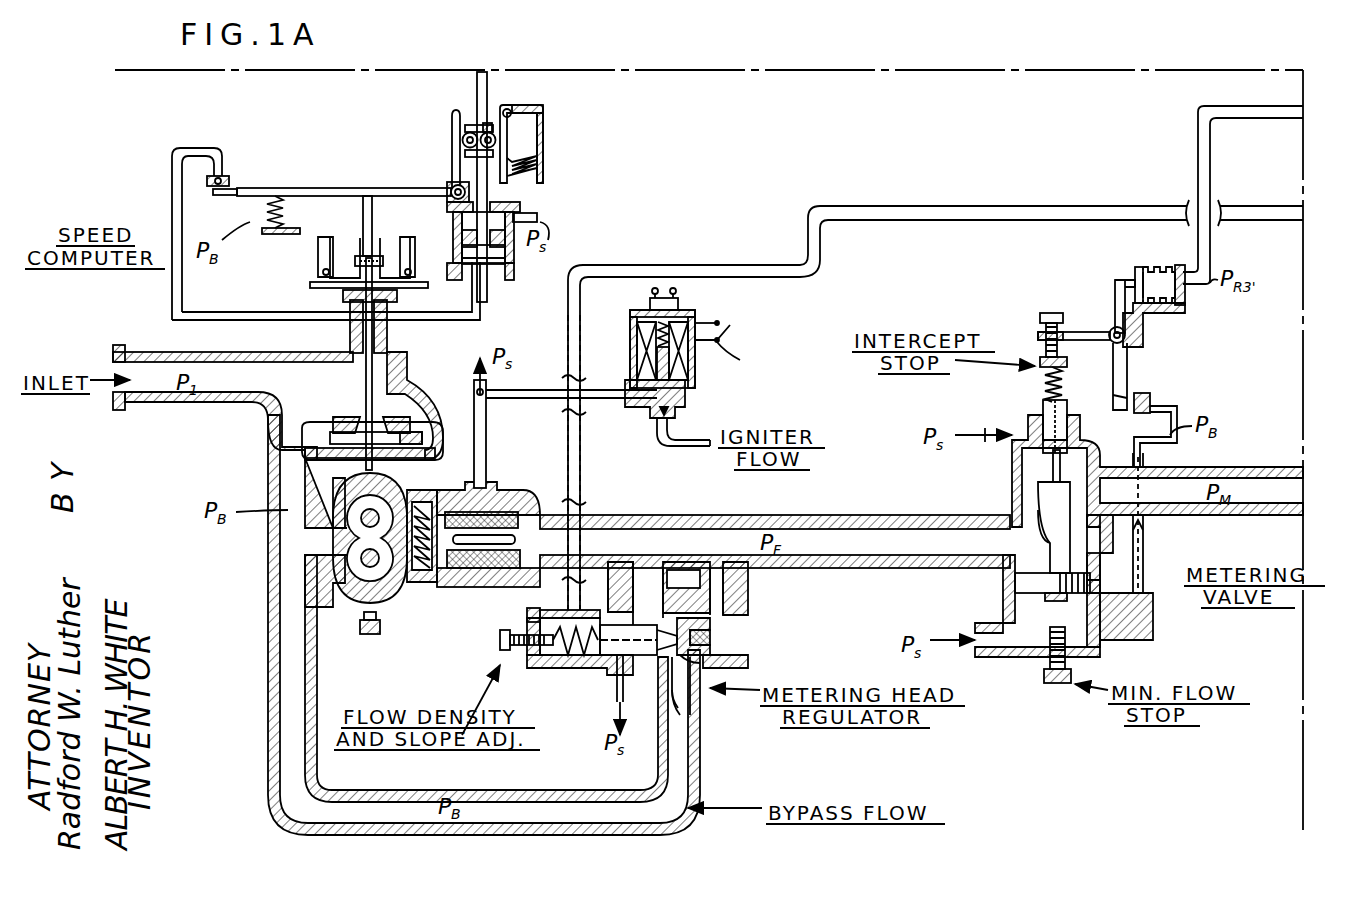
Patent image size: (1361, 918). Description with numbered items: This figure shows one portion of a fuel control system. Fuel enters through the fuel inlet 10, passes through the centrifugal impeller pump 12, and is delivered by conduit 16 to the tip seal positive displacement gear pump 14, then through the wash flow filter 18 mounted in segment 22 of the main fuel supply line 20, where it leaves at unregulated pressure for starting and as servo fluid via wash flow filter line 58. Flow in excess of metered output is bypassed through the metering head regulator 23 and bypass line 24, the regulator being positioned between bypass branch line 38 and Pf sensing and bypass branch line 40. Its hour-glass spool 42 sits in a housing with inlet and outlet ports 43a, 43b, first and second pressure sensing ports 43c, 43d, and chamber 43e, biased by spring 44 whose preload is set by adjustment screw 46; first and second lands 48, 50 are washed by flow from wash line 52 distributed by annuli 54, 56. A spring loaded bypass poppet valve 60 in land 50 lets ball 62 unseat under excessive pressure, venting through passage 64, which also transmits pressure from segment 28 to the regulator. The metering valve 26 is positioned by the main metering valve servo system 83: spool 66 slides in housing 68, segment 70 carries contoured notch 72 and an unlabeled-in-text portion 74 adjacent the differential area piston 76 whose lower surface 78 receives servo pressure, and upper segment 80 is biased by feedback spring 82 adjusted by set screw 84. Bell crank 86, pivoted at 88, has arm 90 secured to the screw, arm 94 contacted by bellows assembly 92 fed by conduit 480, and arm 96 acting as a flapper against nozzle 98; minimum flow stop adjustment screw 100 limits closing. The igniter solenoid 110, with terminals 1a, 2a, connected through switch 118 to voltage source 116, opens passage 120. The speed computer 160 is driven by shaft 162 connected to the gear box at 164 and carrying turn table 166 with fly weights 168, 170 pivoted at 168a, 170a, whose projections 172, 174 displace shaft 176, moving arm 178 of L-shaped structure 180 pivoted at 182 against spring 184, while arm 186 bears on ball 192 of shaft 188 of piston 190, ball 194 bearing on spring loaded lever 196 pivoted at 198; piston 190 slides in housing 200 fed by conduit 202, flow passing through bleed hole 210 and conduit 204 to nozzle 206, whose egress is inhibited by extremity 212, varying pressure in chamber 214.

The fuel inlet 10 is at (117, 392).
The centrifugal impeller pump 12 is at (408, 440).
The tip seal positive displacement gear pump 14 is at (366, 565).
The conduit 16 is at (280, 480).
The wash flow filter 18 is at (485, 538).
The main fuel supply line 20 is at (312, 540).
The segment of main fuel supply line 22 is at (876, 515).
The metering head regulator 23 is at (520, 616).
The bypass line 24 is at (398, 823).
The metering valve 26 is at (1150, 540).
The segment of main fuel supply line 28 is at (1275, 467).
The bypass branch line 38 is at (640, 570).
The Pf sensing and bypass branch line 40 is at (718, 570).
The spool 42 is at (655, 650).
The inlet port 43a is at (650, 580).
The outlet port 43b is at (690, 680).
The first pressure sensing port 43c is at (748, 622).
The second pressure sensing port 43d is at (545, 608).
The chamber 43e is at (535, 655).
The spring 44 is at (562, 660).
The adjustment screw 46 is at (500, 642).
The first land 48 is at (703, 660).
The second land 50 is at (612, 690).
The wash line 52 is at (680, 575).
The annulus 54 is at (612, 655).
The annulus 56 is at (710, 625).
The wash flow filter line 58 is at (486, 438).
The spring loaded bypass poppet valve 60 is at (700, 655).
The ball 62 is at (712, 637).
The passage 64 is at (880, 206).
The spool 66 is at (1053, 468).
The housing 68 is at (1088, 445).
The spool segment 70 is at (1045, 497).
The contoured notch 72 is at (1045, 560).
The metering land 74 is at (1045, 540).
The differential area piston 76 is at (1040, 582).
The lower surface of piston 78 is at (1045, 598).
The upper segment of spool 80 is at (1067, 415).
The feedback spring 82 is at (1043, 382).
The main metering valve servo system 83 is at (1200, 328).
The set screw 84 is at (1048, 313).
The bell crank 86 is at (1135, 356).
The pivot 88 is at (1112, 330).
The arm 90 is at (1090, 340).
The bellows assembly 92 is at (1158, 267).
The arm 94 is at (1115, 290).
The arm 96 is at (1128, 390).
The nozzle 98 is at (1148, 395).
The minimum flow stop adjustment screw 100 is at (1045, 688).
The igniter solenoid 110 is at (708, 374).
The voltage source 116 is at (680, 300).
The switch 118 is at (730, 333).
The passage 120 is at (550, 382).
The terminal 1a is at (744, 356).
The terminal 2a is at (718, 322).
The speed computer 160 is at (160, 188).
The shaft 162 is at (372, 385).
The engine gear box connection 164 is at (365, 634).
The turn table 166 is at (415, 290).
The fly weight 168 is at (410, 243).
The pivot 168a is at (411, 272).
The fly weight 170 is at (318, 243).
The pivot 170a is at (323, 272).
The projection 172 is at (390, 238).
The projection 174 is at (358, 256).
The shaft 176 is at (363, 205).
The arm 178 is at (358, 188).
The L-shaped structure 180 is at (445, 180).
The pivot 182 is at (452, 185).
The spring 184 is at (278, 196).
The arm 186 is at (456, 112).
The shaft of piston 188 is at (484, 72).
The piston 190 is at (505, 252).
The steel ball 192 is at (470, 125).
The steel ball 194 is at (490, 123).
The spring loaded lever 196 is at (543, 130).
The pivot 198 is at (510, 110).
The housing 200 is at (520, 208).
The conduit 202 is at (540, 218).
The conduit 204 is at (172, 290).
The nozzle 206 is at (224, 176).
The bleed hole 210 is at (462, 236).
The extremity of arm 212 is at (234, 196).
The chamber 214 is at (498, 260).
The conduit 480 is at (1200, 116).